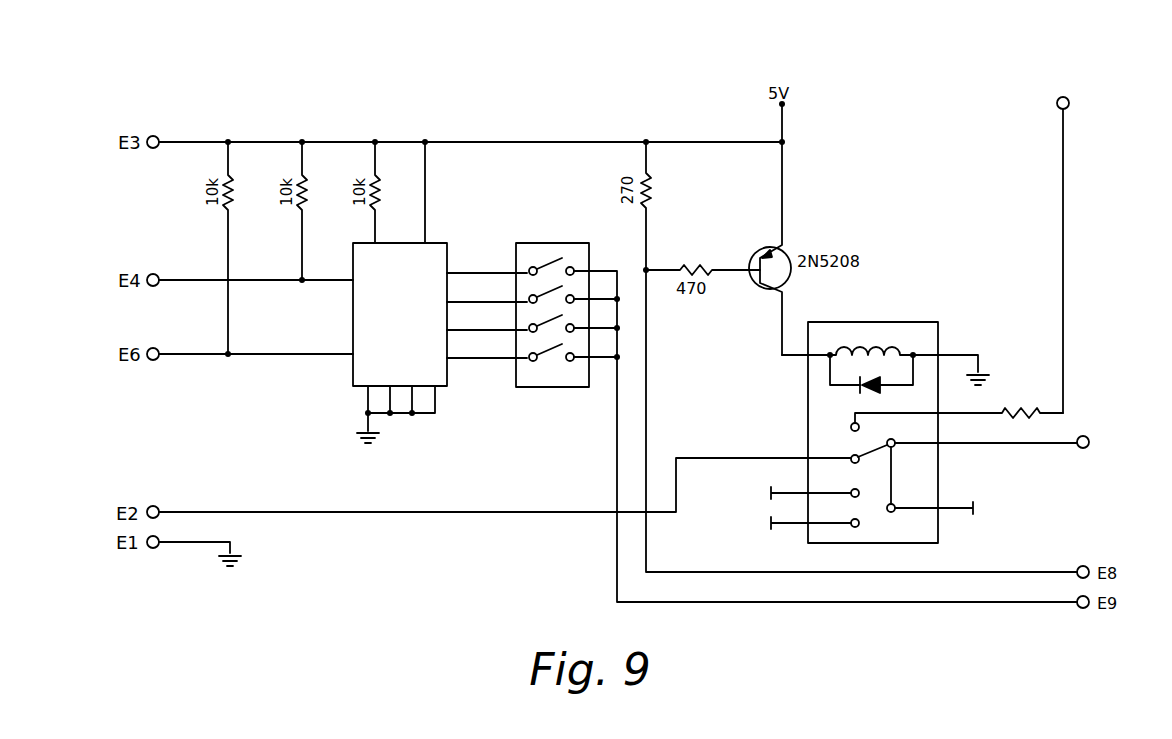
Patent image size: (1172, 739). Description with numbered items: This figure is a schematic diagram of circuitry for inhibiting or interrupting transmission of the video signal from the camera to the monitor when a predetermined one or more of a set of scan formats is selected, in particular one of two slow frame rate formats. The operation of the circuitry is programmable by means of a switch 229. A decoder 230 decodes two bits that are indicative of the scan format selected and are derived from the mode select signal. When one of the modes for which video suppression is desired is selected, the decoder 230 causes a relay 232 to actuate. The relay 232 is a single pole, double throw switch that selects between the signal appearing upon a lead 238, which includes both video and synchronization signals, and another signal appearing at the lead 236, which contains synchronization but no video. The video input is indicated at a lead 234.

The switch 229 is at (530, 388).
The decoder 230 is at (444, 451).
The relay 232 is at (924, 390).
The lead 234 is at (1114, 444).
The lead 236 is at (1078, 243).
The lead 238 is at (158, 507).